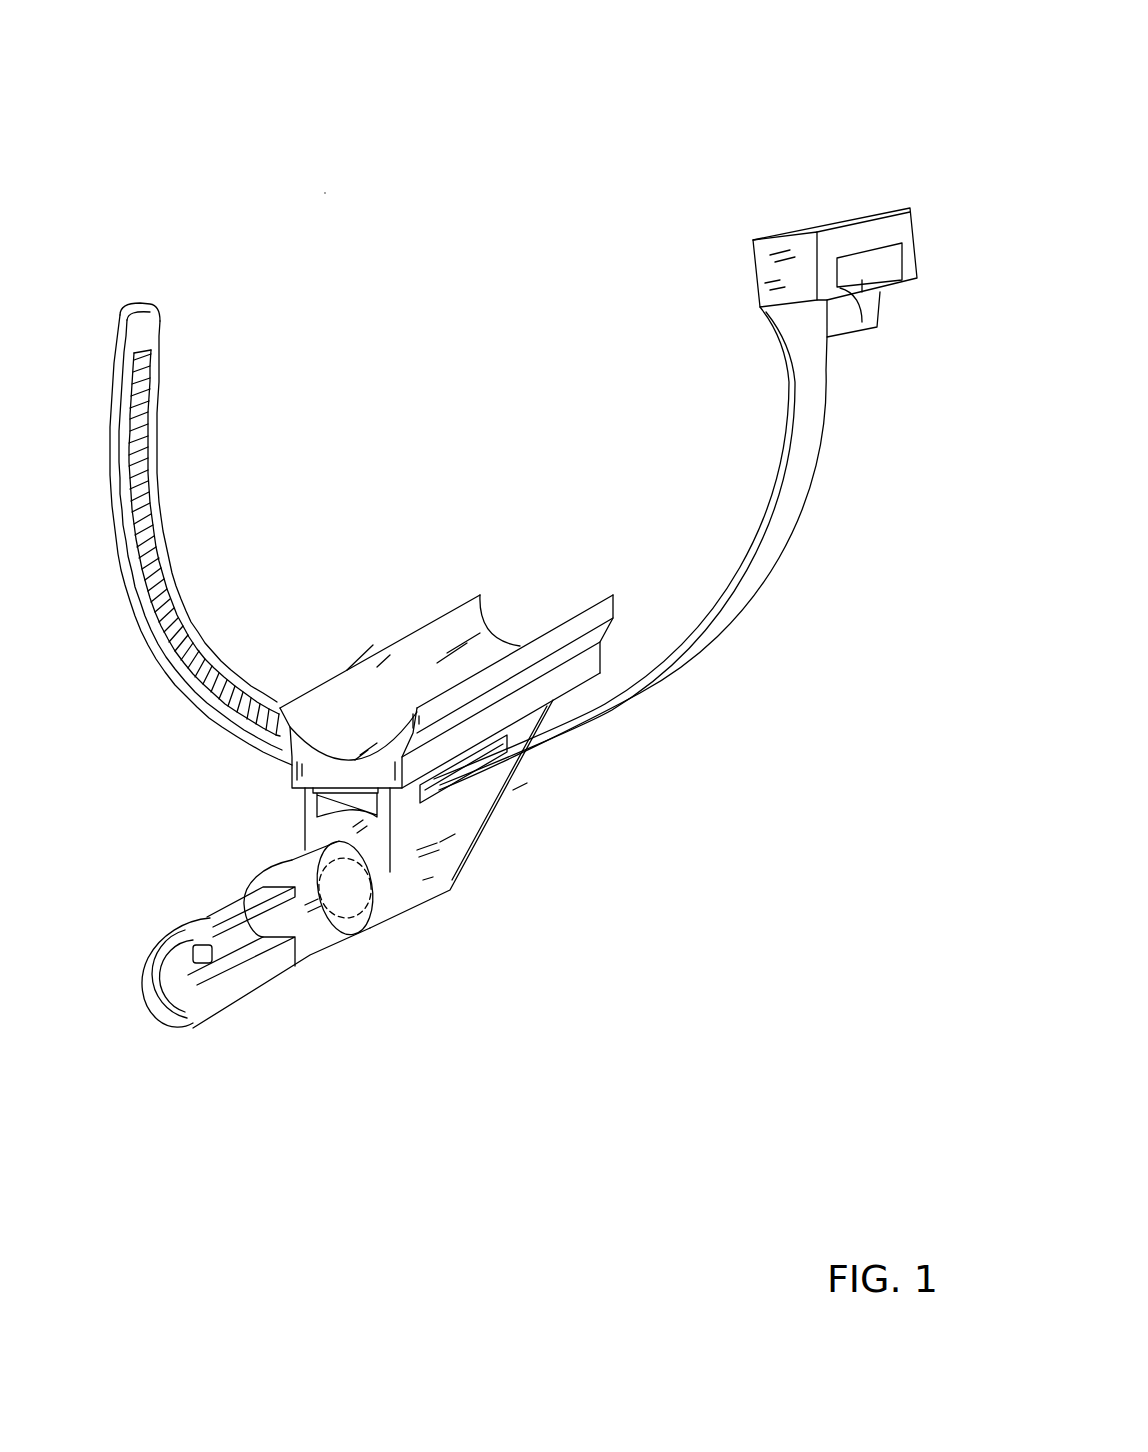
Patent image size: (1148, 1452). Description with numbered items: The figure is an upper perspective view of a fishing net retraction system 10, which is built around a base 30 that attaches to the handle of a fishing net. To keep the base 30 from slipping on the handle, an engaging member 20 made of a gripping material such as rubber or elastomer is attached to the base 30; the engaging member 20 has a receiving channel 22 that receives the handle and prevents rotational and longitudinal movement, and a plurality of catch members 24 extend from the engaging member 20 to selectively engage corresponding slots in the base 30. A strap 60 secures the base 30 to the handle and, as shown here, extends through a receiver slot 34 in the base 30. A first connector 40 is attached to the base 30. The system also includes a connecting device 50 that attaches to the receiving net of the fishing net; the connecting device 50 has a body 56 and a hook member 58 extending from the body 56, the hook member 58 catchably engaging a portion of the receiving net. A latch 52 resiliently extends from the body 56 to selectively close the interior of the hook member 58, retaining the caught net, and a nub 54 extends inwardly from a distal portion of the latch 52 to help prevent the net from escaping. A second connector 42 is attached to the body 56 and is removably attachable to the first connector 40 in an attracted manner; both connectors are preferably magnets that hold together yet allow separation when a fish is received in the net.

The fishing net retraction system 10 is at (316, 184).
The engaging member 20 is at (314, 664).
The receiving channel 22 is at (458, 613).
The catch members 24 is at (305, 815).
The base 30 is at (458, 897).
The receiver slot 34 is at (433, 800).
The first connector 40 is at (362, 865).
The second connector 42 is at (340, 858).
The connecting device 50 is at (148, 925).
The latch 52 is at (230, 913).
The nub 54 is at (212, 957).
The body 56 is at (330, 945).
The hook member 58 is at (190, 1015).
The strap 60 is at (757, 497).